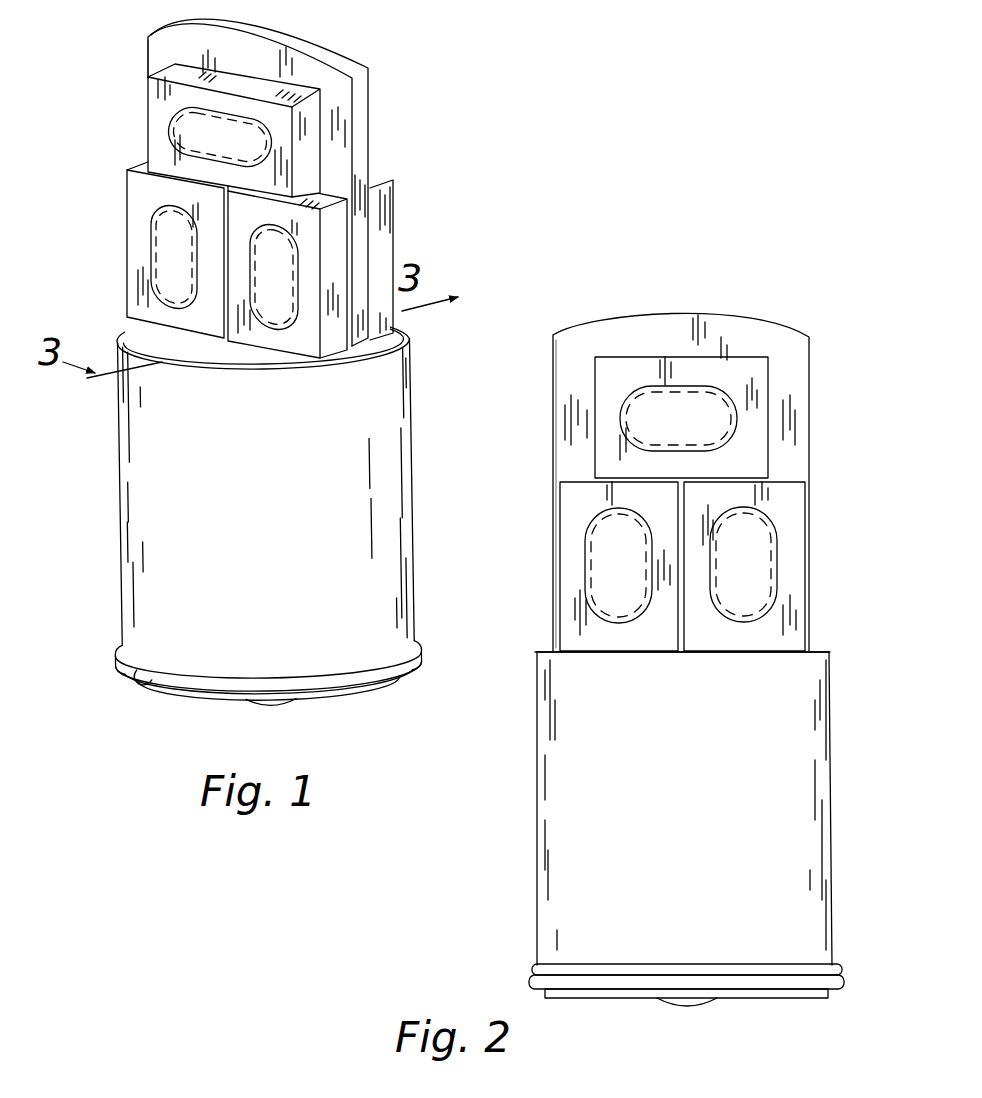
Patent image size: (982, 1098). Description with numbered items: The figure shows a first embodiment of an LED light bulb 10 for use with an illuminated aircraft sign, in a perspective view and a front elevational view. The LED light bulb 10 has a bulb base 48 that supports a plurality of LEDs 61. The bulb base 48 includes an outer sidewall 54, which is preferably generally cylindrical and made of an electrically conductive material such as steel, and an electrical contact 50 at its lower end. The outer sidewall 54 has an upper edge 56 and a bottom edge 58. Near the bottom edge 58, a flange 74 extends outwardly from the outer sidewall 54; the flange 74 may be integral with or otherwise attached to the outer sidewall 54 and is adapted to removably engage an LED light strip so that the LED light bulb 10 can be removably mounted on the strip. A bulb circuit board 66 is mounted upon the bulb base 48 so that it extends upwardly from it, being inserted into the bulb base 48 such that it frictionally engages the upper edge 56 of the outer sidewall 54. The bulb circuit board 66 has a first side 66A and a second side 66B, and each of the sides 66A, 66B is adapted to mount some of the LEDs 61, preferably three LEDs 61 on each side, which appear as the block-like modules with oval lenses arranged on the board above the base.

In FIG. 1, the LED light bulb 10 is at (128, 50).
In FIG. 2, the LED light bulb 10 is at (516, 930).
In FIG. 1, the bulb base 48 is at (112, 500).
In FIG. 2, the bulb base 48 is at (838, 800).
In FIG. 1, the electrical contact 50 is at (276, 706).
In FIG. 2, the electrical contact 50 is at (841, 968).
In FIG. 1, the outer sidewall 54 is at (280, 577).
In FIG. 2, the outer sidewall 54 is at (680, 824).
In FIG. 1, the upper edge 56 is at (413, 338).
In FIG. 2, the upper edge 56 is at (540, 665).
In FIG. 1, the bottom edge 58 is at (413, 625).
In FIG. 2, the bottom edge 58 is at (832, 957).
In FIG. 1, the LEDs 61 is at (176, 146).
In FIG. 2, the LEDs 61 is at (700, 357).
In FIG. 1, the bulb circuit board 66 is at (367, 86).
In FIG. 2, the bulb circuit board 66 is at (780, 332).
In FIG. 1, the first side 66A is at (318, 72).
In FIG. 2, the first side 66A is at (610, 349).
In FIG. 1, the second side 66B is at (378, 141).
In FIG. 1, the flange 74 is at (401, 682).
In FIG. 2, the flange 74 is at (841, 988).